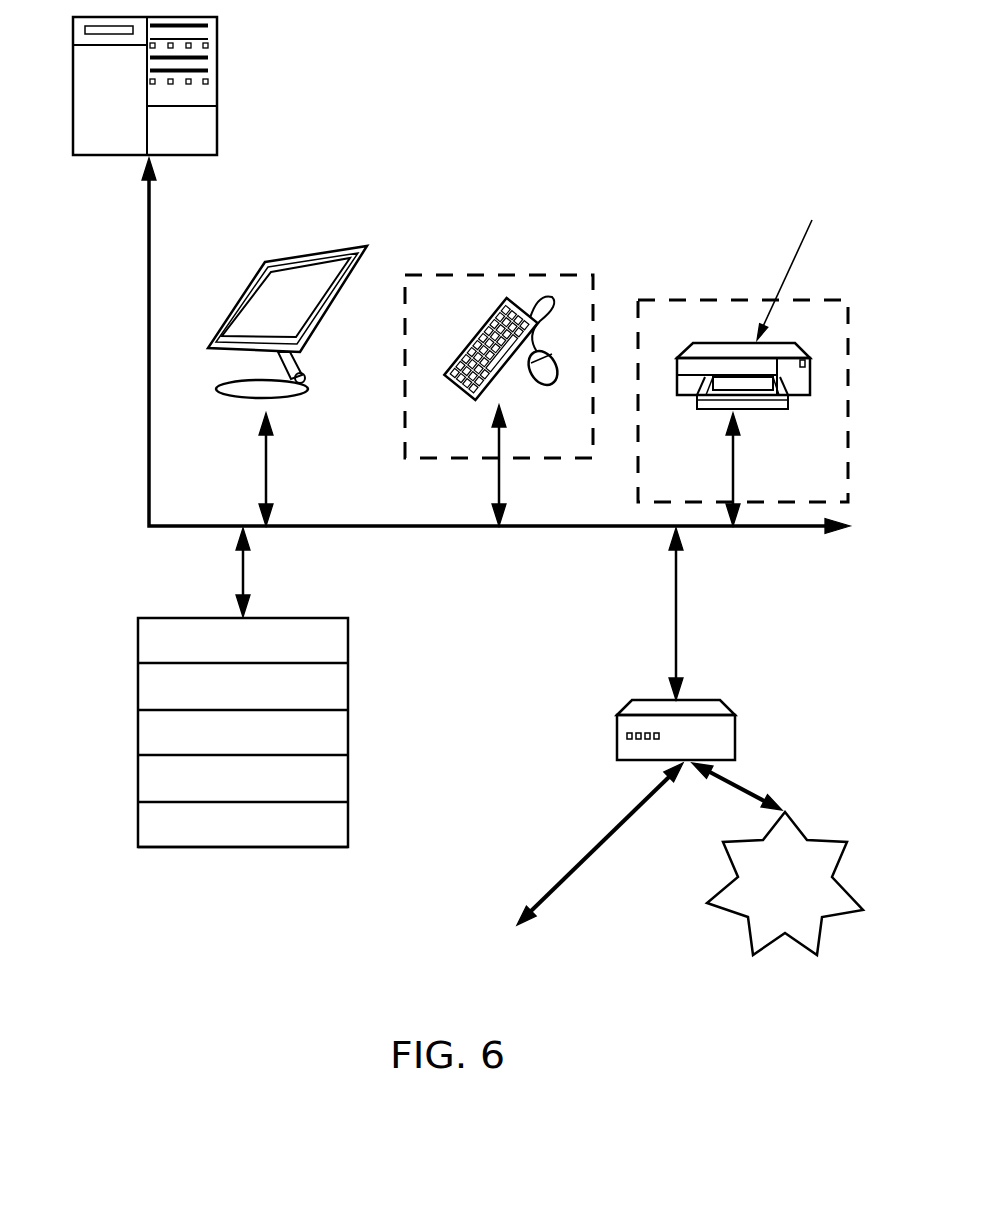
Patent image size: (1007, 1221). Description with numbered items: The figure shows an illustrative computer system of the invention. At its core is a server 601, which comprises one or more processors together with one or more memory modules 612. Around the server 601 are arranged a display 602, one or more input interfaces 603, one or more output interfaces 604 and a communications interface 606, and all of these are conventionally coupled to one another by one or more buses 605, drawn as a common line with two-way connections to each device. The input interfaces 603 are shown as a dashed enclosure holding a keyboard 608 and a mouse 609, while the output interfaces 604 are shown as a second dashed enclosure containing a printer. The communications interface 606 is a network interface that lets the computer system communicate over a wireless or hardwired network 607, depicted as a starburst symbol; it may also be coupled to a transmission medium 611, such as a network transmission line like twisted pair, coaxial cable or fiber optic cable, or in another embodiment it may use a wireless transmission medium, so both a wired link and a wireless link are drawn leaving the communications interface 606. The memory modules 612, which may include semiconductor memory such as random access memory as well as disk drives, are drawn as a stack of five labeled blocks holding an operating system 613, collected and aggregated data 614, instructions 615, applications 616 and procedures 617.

The server 601 is at (228, 89).
The display 602 is at (335, 205).
The input interfaces 603 is at (464, 264).
The output interfaces 604 is at (714, 287).
The buses 605 is at (470, 543).
The communications interface 606 is at (605, 728).
The wireless or hardwired network 607 is at (702, 905).
The keyboard 608 is at (517, 289).
The mouse 609 is at (566, 355).
The transmission medium 611 is at (606, 827).
The memory modules 612 is at (195, 749).
The operating system 613 is at (128, 642).
The collected and aggregated data 614 is at (128, 688).
The instructions 615 is at (128, 734).
The applications 616 is at (128, 779).
The procedures 617 is at (128, 825).